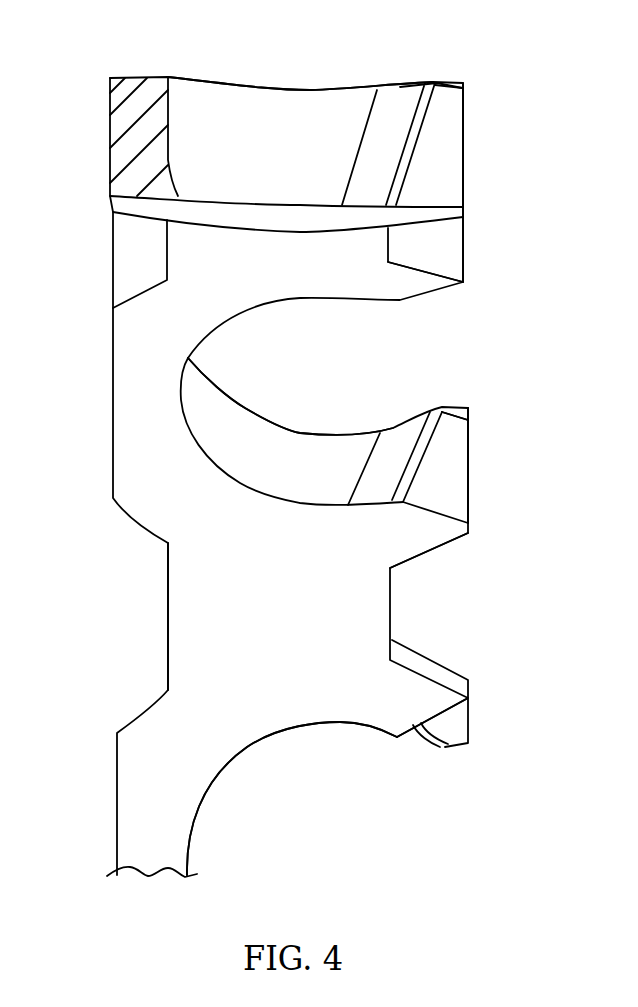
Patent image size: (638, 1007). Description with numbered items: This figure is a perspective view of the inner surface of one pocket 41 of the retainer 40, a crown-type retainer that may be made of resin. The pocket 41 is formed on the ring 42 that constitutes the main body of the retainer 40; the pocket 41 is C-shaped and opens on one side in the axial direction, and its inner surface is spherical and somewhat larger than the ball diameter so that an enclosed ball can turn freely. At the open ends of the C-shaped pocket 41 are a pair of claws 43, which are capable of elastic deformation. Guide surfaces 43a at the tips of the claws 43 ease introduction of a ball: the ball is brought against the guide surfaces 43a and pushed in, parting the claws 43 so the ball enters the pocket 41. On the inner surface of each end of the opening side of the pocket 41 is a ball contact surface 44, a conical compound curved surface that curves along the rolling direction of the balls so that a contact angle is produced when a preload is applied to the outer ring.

The retainer 40 is at (80, 360).
The pocket 41 is at (213, 107).
The ring 42 is at (202, 607).
The claw 43 is at (465, 122).
The guide surface 43a is at (445, 182).
The ball contact surface 44 is at (380, 137).